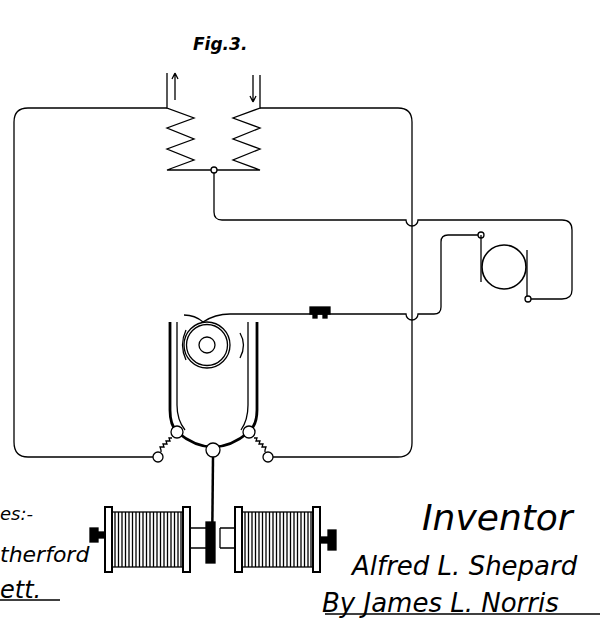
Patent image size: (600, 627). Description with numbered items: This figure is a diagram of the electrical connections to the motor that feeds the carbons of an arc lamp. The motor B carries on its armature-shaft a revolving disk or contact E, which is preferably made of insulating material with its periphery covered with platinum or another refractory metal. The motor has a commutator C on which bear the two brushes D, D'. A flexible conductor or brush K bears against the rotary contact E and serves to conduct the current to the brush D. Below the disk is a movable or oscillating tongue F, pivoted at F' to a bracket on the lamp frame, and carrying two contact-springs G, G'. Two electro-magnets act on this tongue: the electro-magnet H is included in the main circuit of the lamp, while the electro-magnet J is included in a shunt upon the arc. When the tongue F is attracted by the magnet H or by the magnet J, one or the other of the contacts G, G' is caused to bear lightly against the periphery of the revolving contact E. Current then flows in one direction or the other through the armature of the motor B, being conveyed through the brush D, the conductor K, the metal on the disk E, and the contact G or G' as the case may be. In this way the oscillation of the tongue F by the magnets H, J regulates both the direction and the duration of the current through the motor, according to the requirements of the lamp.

The revolving disk or contact E is at (203, 322).
The flexible conductor or brush K is at (257, 313).
The motor B is at (205, 352).
The contact-spring G is at (258, 377).
The contact-spring G' is at (166, 377).
The movable or oscillating tongue F is at (223, 474).
The pivot F' is at (202, 456).
The electro-magnet H is at (136, 520).
The electro-magnet J is at (270, 515).
The commutator C is at (504, 267).
The brush D is at (470, 257).
The brush D' is at (539, 273).